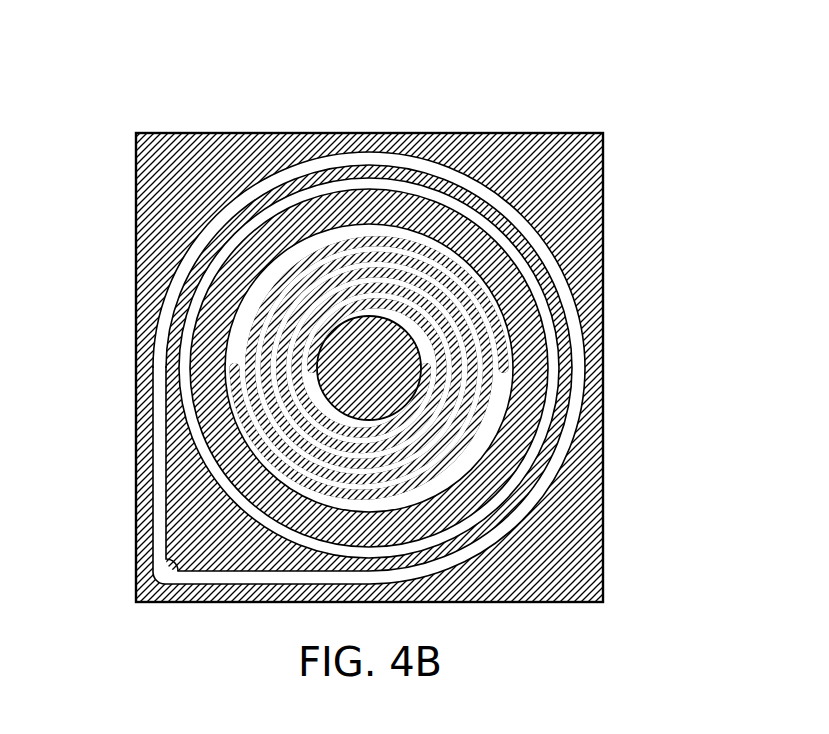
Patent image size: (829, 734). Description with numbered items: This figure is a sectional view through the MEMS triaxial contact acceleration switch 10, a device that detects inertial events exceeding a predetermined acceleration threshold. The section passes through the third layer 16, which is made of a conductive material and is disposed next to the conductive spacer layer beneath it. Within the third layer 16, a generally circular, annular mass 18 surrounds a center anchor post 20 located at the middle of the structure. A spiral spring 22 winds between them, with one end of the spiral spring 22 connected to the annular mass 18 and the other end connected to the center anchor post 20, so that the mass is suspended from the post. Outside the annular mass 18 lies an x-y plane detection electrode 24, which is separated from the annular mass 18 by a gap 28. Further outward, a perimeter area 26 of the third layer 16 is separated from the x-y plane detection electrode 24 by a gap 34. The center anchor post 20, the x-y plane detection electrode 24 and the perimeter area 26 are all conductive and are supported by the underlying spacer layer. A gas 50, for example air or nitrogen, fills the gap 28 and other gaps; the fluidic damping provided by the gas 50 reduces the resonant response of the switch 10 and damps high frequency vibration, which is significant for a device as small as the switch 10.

The MEMS triaxial contact acceleration switch 10 is at (380, 303).
The third layer 16 is at (326, 324).
The annular mass 18 is at (370, 187).
The center anchor post 20 is at (547, 253).
The spiral spring 22 is at (490, 405).
The x-y plane detection electrode 24 is at (425, 162).
The perimeter area 26 is at (157, 180).
The gap 28 is at (492, 512).
The gap 34 is at (155, 380).
The gas 50 is at (183, 288).